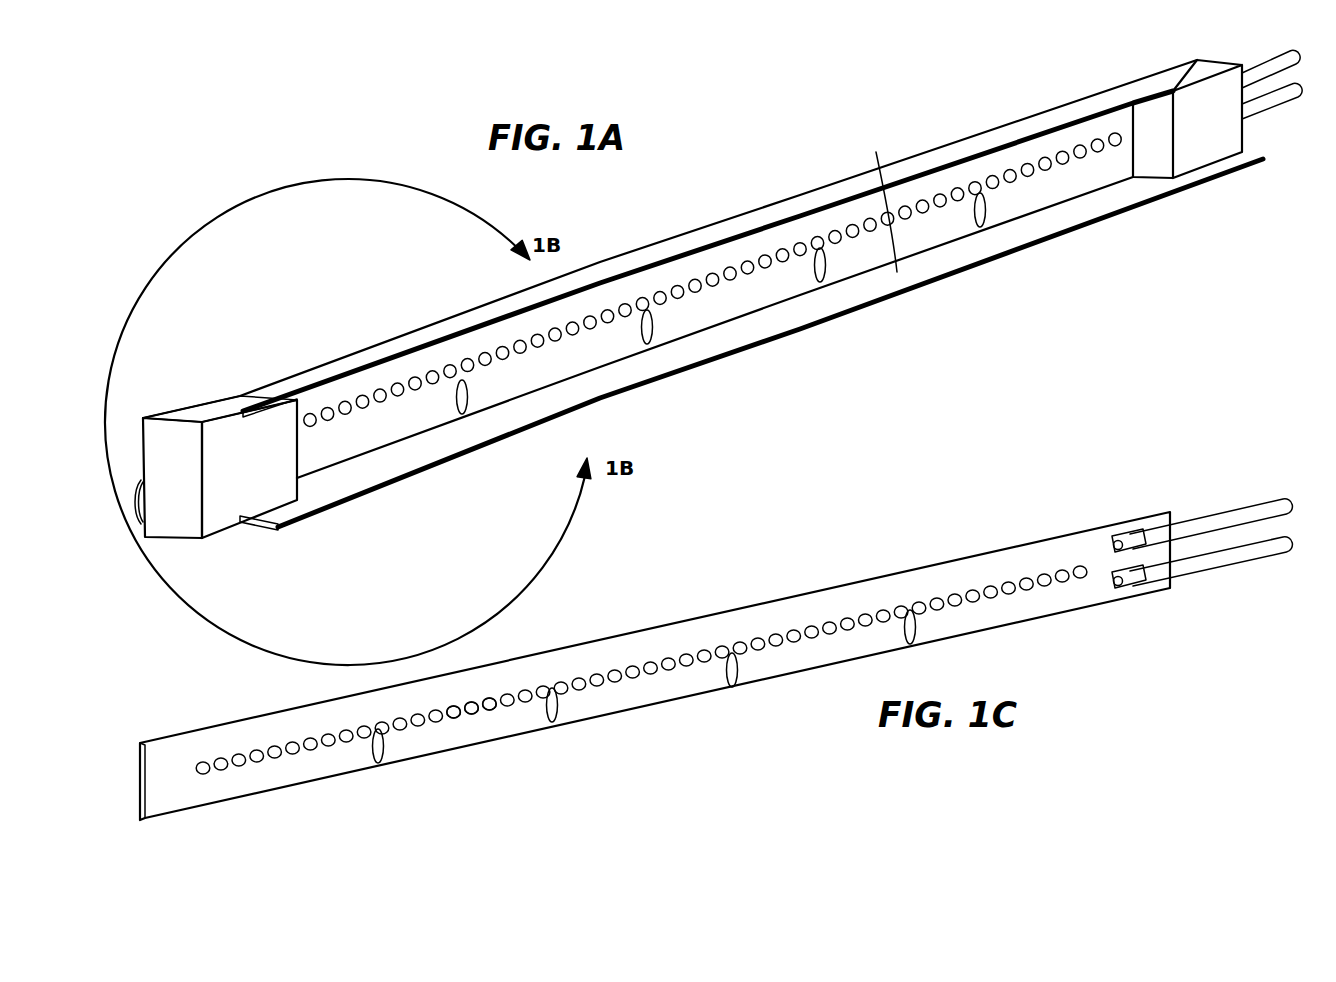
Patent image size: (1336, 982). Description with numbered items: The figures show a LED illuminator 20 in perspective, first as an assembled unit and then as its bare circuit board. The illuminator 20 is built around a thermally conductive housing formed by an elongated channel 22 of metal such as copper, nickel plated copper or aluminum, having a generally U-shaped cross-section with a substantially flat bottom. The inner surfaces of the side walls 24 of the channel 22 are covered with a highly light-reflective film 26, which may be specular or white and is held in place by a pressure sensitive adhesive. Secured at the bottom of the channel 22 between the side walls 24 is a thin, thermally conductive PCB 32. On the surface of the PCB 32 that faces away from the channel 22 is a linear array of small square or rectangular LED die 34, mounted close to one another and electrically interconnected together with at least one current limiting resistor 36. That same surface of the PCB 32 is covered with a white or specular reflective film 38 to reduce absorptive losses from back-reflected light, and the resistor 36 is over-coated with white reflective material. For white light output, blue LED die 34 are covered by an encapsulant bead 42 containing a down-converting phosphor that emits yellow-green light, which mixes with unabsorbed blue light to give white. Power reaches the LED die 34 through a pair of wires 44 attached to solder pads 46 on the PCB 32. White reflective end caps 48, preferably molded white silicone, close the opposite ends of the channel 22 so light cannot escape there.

In FIG. 1A, the LED illuminator 20 is at (339, 124).
In FIG. 1A, the channel 22 is at (503, 297).
In FIG. 1A, the side walls 24 is at (898, 170).
In FIG. 1A, the light-reflective film 26 is at (400, 452).
In FIG. 1A, the PCB 32 is at (1090, 173).
In FIG. 1C, the PCB 32 is at (138, 768).
In FIG. 1C, the LED die 34 is at (993, 598).
In FIG. 1A, the current limiting resistor 36 is at (828, 272).
In FIG. 1C, the current limiting resistor 36 is at (557, 712).
In FIG. 1C, the reflective film 38 is at (193, 790).
In FIG. 1A, the encapsulant bead 42 is at (510, 358).
In FIG. 1C, the encapsulant bead 42 is at (492, 707).
In FIG. 1C, the wires 44 is at (1182, 570).
In FIG. 1C, the solder pads 46 is at (1113, 580).
In FIG. 1A, the end caps 48 is at (182, 408).